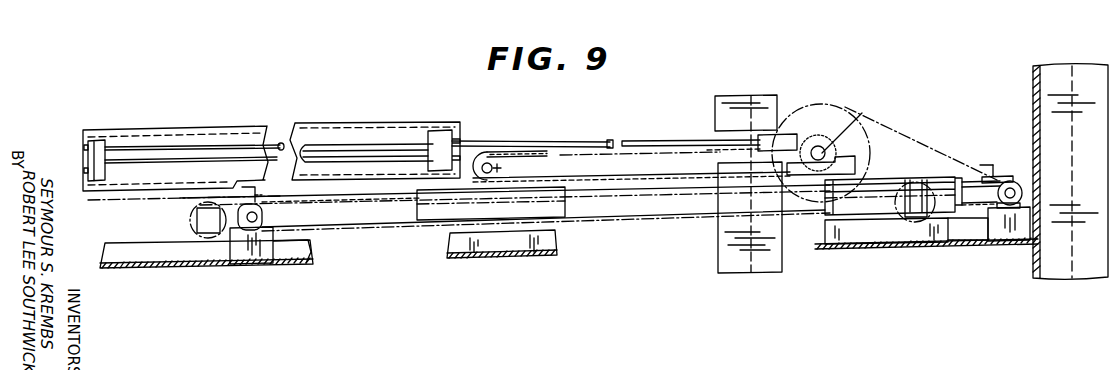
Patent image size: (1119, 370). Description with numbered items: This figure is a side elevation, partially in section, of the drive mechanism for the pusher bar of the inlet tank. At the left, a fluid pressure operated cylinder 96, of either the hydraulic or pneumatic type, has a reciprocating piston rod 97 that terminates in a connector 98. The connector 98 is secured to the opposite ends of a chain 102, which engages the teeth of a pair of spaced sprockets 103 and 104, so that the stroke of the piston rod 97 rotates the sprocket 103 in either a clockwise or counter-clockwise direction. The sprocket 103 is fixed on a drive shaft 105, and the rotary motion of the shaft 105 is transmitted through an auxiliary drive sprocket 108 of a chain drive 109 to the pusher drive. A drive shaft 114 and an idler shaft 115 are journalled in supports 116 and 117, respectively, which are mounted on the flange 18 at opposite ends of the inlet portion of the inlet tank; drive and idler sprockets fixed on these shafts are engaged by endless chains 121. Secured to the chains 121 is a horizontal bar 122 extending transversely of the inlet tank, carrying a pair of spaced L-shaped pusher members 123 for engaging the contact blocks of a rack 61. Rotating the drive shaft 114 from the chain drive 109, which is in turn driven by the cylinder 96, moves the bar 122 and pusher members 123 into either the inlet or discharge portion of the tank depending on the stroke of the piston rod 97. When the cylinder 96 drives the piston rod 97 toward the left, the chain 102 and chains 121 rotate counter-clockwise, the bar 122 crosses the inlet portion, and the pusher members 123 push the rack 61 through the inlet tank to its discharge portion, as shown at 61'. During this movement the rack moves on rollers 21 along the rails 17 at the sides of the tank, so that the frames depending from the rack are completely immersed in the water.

The fluid pressure operated cylinder 96 is at (184, 160).
The rack in pushed position 61' is at (184, 214).
The piston rod 97 is at (545, 136).
The sprocket 104 is at (501, 169).
The endless chains 121 is at (605, 217).
The idler shaft 115 is at (262, 216).
The support 117 is at (270, 263).
The flange 18 is at (171, 267).
The chain 102 is at (618, 150).
The connector 98 is at (790, 136).
The drive shaft 105 is at (836, 151).
The sprocket 103 is at (860, 123).
The chain drive 109 is at (912, 138).
The rack 61 is at (912, 182).
The rollers 21 is at (915, 214).
The rails 17 is at (848, 219).
The support 116 is at (992, 227).
The auxiliary drive sprocket 108 is at (1006, 183).
The drive shaft 114 is at (1016, 192).
The horizontal bar 122 is at (1004, 175).
The L-shaped pusher members 123 is at (981, 164).